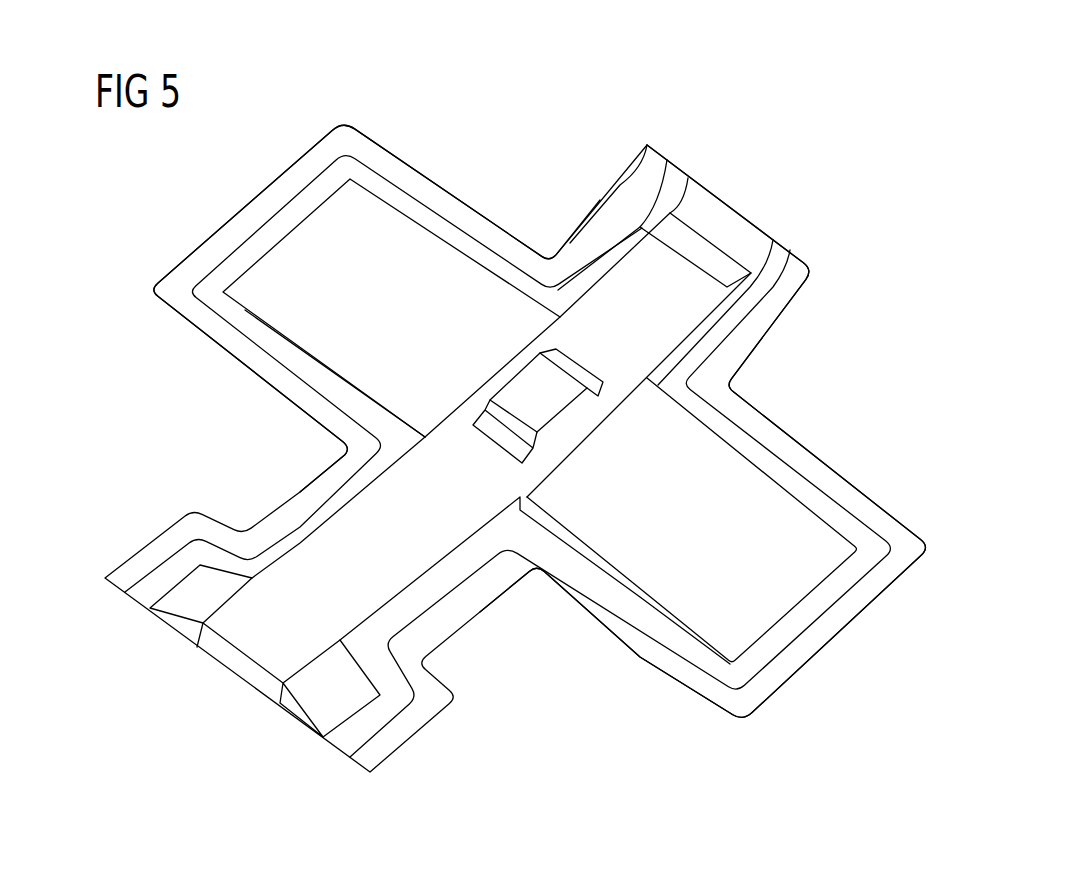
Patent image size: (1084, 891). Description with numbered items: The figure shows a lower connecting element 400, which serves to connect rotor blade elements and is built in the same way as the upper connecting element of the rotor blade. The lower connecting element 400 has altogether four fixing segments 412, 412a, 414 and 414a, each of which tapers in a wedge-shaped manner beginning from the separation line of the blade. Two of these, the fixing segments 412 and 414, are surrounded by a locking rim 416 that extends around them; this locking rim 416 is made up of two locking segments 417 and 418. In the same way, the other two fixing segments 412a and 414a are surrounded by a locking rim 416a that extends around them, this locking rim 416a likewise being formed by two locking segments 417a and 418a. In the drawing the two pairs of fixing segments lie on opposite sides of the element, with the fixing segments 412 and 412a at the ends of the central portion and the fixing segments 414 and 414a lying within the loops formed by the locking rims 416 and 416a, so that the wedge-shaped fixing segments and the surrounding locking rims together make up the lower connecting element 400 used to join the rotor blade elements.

The lower connecting element 400 is at (511, 469).
The fixing segment 412 is at (192, 590).
The fixing segment 412a is at (343, 705).
The fixing segment 414 is at (412, 257).
The fixing segment 414a is at (755, 503).
The locking rim 416 is at (369, 358).
The locking rim 416a is at (637, 451).
The locking segment 417 is at (267, 238).
The locking segment 417a is at (480, 557).
The locking segment 418 is at (213, 247).
The locking segment 418a is at (800, 662).